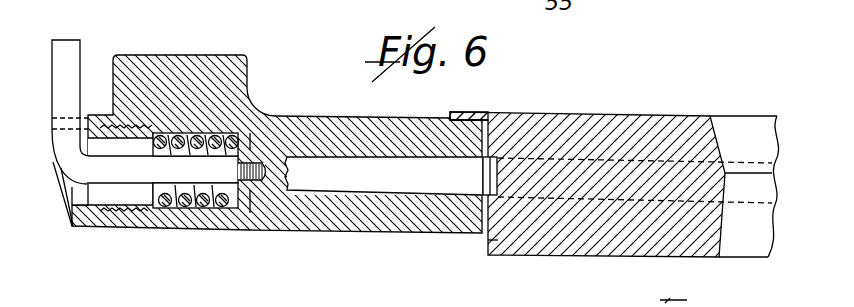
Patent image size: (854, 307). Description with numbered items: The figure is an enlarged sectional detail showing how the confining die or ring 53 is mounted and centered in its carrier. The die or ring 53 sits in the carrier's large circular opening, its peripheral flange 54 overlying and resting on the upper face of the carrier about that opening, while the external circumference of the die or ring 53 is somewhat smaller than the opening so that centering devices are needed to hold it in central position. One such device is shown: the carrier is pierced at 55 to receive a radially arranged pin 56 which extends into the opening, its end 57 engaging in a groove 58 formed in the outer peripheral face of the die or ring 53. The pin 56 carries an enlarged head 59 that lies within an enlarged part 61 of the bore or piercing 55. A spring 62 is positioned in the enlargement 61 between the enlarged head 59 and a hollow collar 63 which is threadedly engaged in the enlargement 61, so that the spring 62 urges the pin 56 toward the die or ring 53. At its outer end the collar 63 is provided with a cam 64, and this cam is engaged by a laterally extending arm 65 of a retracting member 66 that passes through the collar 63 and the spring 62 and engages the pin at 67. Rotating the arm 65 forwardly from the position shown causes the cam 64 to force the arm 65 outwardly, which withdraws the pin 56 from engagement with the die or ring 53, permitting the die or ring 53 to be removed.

The die or ring 53 is at (618, 130).
The peripheral flange 54 is at (464, 114).
The bore or piercing 55 is at (311, 153).
The pin 56 is at (390, 177).
The pin end 57 is at (498, 157).
The groove 58 is at (498, 195).
The enlarged head 59 is at (245, 198).
The enlarged part of the bore 61 is at (173, 207).
The spring 62 is at (200, 138).
The hollow collar 63 is at (117, 208).
The cam 64 is at (62, 188).
The laterally extending arm 65 is at (65, 62).
The retracting member 66 is at (102, 170).
The engagement point 67 is at (256, 155).